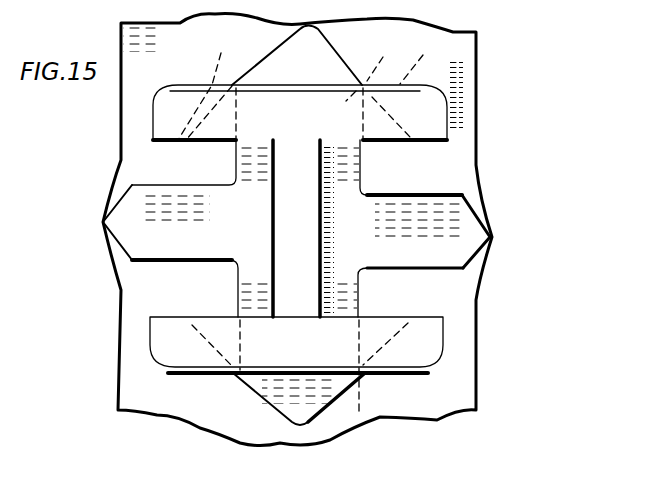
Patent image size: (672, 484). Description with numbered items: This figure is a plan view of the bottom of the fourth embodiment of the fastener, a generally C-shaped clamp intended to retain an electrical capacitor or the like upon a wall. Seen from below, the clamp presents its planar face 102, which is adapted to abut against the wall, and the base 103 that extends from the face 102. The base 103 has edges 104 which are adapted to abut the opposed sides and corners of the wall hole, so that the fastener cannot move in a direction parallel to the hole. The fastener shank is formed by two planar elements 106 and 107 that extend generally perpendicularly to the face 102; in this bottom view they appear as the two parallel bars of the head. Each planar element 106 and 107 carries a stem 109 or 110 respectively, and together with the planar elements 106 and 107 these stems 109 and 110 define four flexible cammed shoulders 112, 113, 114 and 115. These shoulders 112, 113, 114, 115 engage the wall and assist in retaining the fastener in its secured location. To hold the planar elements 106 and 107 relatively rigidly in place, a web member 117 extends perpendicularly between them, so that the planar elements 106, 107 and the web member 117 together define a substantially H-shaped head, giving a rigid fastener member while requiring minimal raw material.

The planar face 102 is at (176, 69).
The base 103 is at (247, 254).
The edges 104 is at (322, 33).
The planar element 106 is at (318, 120).
The planar element 107 is at (315, 355).
The stem 109 is at (386, 86).
The stem 110 is at (360, 430).
The flexible cammed shoulder 112 is at (207, 84).
The flexible cammed shoulder 113 is at (399, 73).
The flexible cammed shoulder 114 is at (176, 372).
The flexible cammed shoulder 115 is at (418, 376).
The web member 117 is at (305, 210).